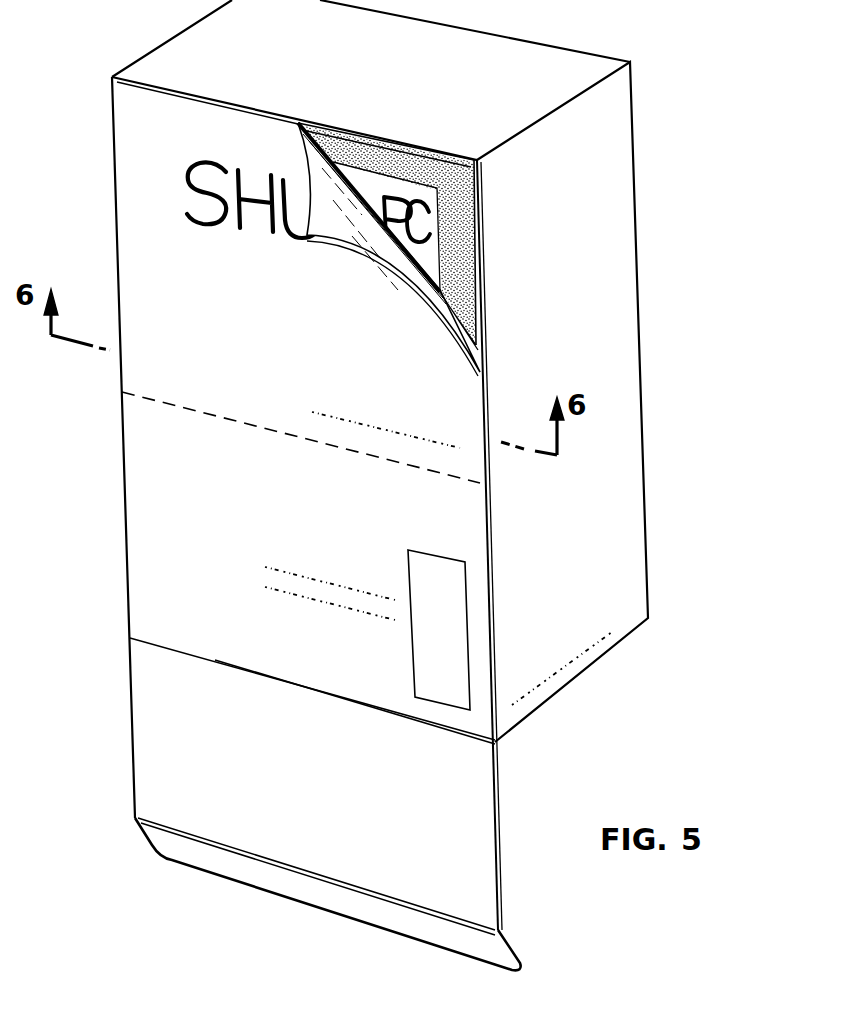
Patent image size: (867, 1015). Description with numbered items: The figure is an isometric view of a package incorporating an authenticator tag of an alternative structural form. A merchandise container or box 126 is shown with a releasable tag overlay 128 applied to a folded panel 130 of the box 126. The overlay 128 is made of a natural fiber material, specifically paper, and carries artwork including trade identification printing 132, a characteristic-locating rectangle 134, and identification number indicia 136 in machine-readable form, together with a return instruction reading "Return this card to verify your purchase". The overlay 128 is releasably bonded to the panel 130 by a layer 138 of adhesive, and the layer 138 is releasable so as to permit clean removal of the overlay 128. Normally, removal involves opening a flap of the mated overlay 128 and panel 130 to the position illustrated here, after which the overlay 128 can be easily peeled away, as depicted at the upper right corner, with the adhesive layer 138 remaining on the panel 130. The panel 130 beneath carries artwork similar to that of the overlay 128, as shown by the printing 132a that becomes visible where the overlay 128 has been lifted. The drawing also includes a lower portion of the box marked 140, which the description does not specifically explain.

The merchandise container or box 126 is at (645, 458).
The releasable tag overlay 128 is at (297, 123).
The folded panel 130 is at (435, 157).
The trade identification printing 132 is at (208, 157).
The printing 132a is at (425, 199).
The characteristic-locating rectangle 134 is at (462, 625).
The identification number indicia 136 is at (140, 716).
The layer of adhesive 138 is at (348, 150).
The bottom tear-off flap 140 is at (497, 786).